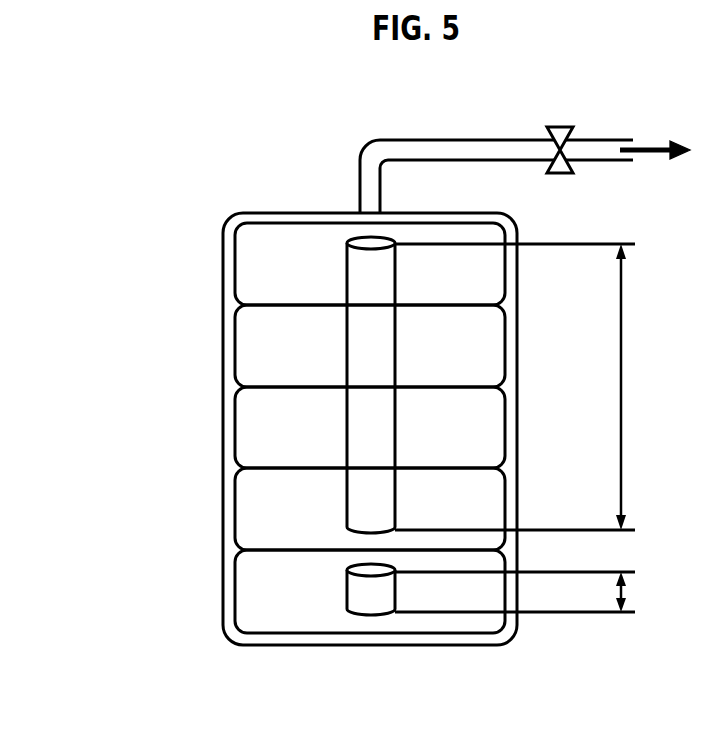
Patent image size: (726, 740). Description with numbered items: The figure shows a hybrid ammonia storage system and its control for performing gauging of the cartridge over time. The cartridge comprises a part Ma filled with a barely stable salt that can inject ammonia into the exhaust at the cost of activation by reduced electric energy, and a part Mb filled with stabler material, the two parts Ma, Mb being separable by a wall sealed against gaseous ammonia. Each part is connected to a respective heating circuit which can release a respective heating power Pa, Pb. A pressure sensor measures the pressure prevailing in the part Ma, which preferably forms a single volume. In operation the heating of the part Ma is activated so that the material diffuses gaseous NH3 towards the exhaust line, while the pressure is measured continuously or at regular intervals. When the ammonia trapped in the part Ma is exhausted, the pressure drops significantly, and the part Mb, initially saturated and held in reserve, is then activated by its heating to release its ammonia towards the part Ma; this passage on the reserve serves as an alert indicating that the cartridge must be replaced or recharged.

The ammonia outlet NH3 is at (658, 133).
The part Ma of the cartridge Ma is at (370, 264).
The part Mb of the cartridge Mb is at (370, 591).
The heating power Pa is at (528, 387).
The heating power Pb is at (528, 592).